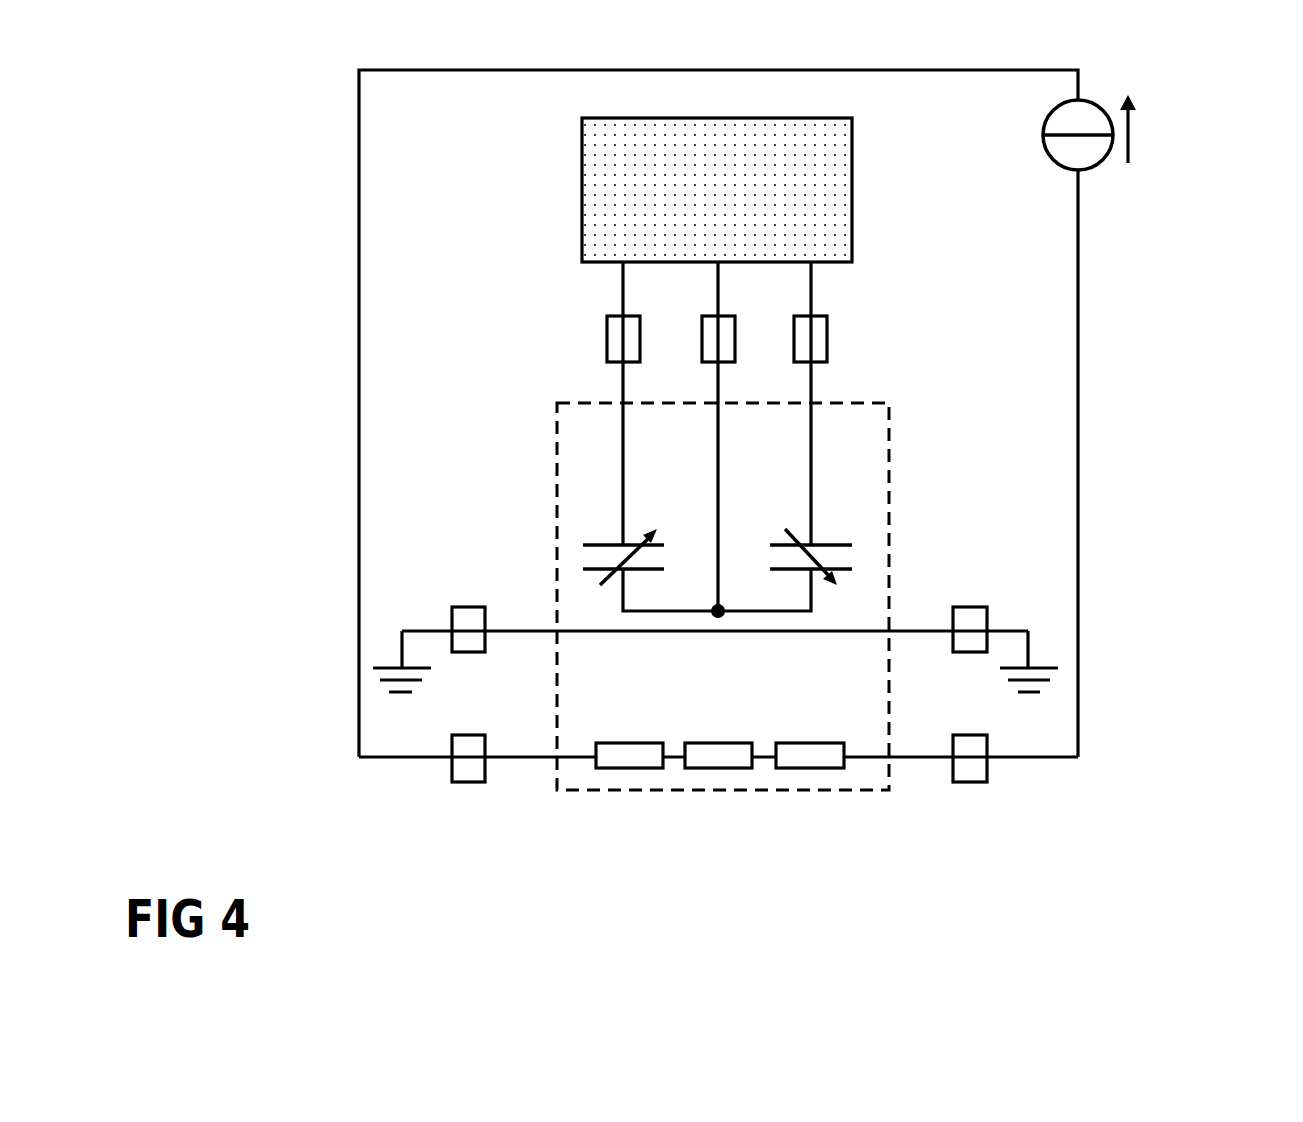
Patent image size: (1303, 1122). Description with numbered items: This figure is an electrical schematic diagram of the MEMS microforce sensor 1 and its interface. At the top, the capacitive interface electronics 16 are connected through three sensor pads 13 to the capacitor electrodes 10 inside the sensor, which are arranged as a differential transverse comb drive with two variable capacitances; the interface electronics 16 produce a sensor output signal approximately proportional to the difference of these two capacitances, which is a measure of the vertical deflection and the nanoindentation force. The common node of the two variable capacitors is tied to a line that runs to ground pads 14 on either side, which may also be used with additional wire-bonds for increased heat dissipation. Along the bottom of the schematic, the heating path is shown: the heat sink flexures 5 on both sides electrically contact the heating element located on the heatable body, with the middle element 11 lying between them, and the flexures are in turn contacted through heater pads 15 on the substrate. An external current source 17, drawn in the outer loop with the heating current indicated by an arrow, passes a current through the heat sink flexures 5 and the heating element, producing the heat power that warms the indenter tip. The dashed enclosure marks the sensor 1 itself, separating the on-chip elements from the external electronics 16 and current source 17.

The MEMS microforce sensor 1 is at (893, 485).
The heat sink flexures 5 is at (623, 762).
The capacitor electrodes 10 is at (837, 563).
The temperature measuring resistor 11 is at (742, 762).
The sensor pads 13 is at (617, 335).
The ground pads 14 is at (468, 618).
The heater pads 15 is at (465, 753).
The capacitive interface electronics 16 is at (673, 208).
The external current source 17 is at (1088, 118).